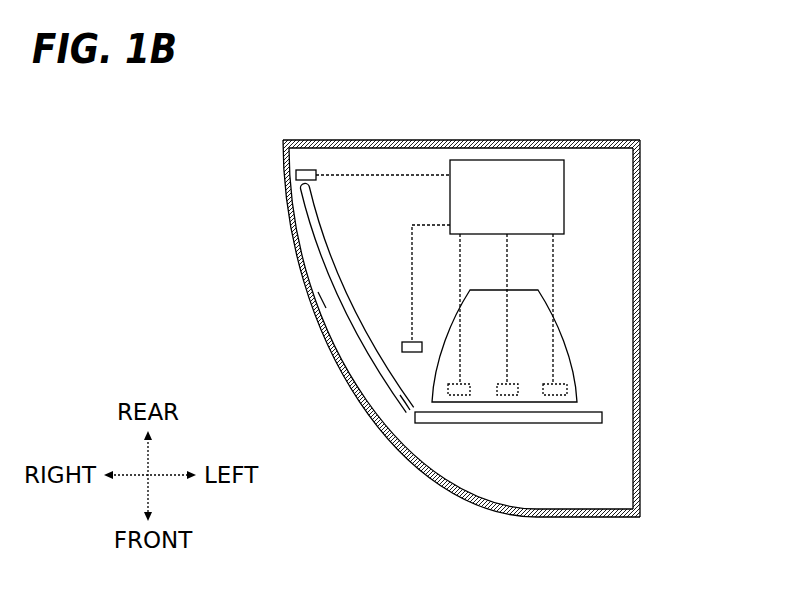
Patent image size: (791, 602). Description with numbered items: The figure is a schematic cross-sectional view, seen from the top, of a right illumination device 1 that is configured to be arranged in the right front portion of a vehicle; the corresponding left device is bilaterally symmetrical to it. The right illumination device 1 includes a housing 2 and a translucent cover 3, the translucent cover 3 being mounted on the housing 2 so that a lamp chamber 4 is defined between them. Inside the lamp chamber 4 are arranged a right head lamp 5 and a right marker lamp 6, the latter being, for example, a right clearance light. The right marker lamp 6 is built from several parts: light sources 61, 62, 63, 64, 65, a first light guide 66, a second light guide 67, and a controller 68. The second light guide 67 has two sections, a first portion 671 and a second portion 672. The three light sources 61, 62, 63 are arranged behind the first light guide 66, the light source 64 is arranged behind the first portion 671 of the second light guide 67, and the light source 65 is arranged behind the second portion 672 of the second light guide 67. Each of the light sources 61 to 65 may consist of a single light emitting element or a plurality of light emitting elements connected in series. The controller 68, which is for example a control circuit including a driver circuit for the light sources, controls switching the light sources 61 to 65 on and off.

The right illumination device 1 is at (485, 320).
The housing 2 is at (641, 297).
The translucent cover 3 is at (534, 518).
The lamp chamber 4 is at (618, 478).
The right head lamp 5 is at (524, 290).
The right marker lamp 6 is at (507, 372).
The light source 61 is at (556, 386).
The light source 62 is at (510, 388).
The light source 63 is at (455, 386).
The light source 64 is at (410, 340).
The light source 65 is at (305, 168).
The first light guide 66 is at (541, 425).
The second light guide 67 is at (340, 250).
The first portion 671 is at (400, 395).
The second portion 672 is at (318, 292).
The controller 68 is at (566, 200).